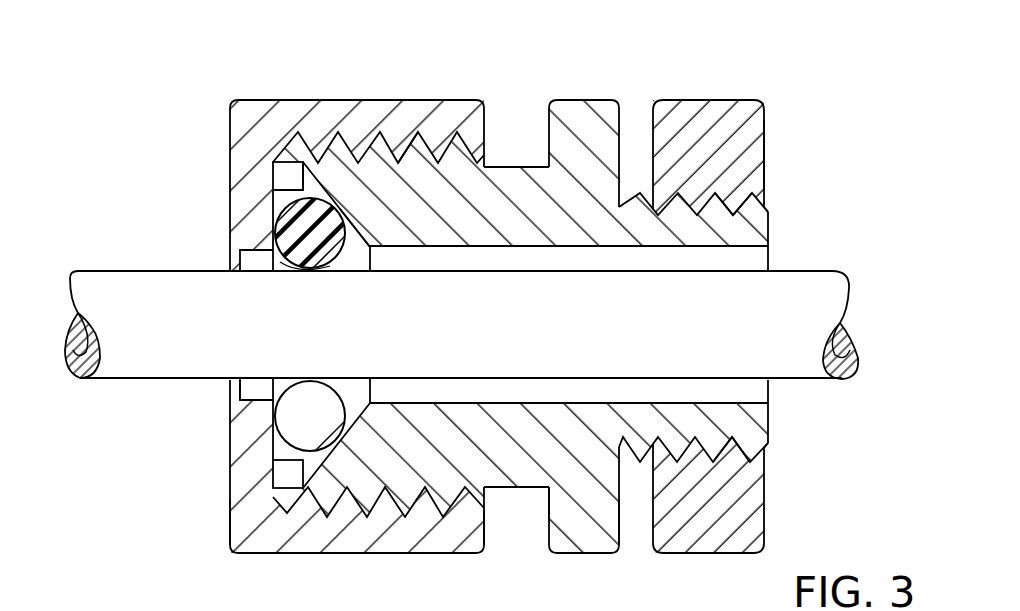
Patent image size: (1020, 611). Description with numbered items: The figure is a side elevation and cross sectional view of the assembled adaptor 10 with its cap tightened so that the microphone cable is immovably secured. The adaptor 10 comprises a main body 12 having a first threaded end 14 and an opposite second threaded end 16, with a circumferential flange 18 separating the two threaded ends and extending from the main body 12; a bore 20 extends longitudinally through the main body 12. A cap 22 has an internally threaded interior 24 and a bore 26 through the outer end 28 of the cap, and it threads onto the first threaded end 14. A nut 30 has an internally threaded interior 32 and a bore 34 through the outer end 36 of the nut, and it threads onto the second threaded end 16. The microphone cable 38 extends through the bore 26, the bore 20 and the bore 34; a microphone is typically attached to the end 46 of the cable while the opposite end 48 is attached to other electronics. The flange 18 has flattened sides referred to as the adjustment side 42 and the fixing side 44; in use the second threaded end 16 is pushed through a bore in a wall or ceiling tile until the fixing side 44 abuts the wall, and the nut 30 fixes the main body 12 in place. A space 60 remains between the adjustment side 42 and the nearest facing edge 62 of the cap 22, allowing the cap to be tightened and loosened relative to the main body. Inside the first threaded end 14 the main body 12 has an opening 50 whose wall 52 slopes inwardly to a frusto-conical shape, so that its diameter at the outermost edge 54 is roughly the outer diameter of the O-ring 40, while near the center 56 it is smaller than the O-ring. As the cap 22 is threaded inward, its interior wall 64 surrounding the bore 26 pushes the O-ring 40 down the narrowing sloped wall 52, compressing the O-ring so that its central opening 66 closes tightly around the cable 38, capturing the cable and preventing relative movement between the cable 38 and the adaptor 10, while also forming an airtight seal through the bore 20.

The adaptor 10 is at (170, 62).
The main body 12 is at (606, 93).
The first threaded end 14 is at (355, 507).
The second threaded end 16 is at (683, 440).
The circumferential flange 18 is at (585, 110).
The bore 20 is at (461, 247).
The cap 22 is at (342, 108).
The internally threaded interior 24 is at (424, 150).
The bore 26 is at (238, 394).
The outer end 28 is at (230, 522).
The nut 30 is at (722, 100).
The internally threaded interior 32 is at (742, 208).
The bore 34 is at (762, 445).
The outer end 36 is at (767, 150).
The microphone cable 38 is at (101, 271).
The O-ring 40 is at (284, 424).
The adjustment side 42 is at (547, 517).
The fixing side 44 is at (621, 523).
The end 46 is at (64, 360).
The opposite end 48 is at (858, 373).
The opening 50 is at (300, 197).
The wall 52 is at (300, 226).
The outermost edge 54 is at (300, 157).
The center 56 is at (372, 250).
The space 60 is at (547, 80).
The facing edge 62 is at (483, 527).
The interior wall 64 is at (275, 476).
The central opening 66 is at (312, 272).